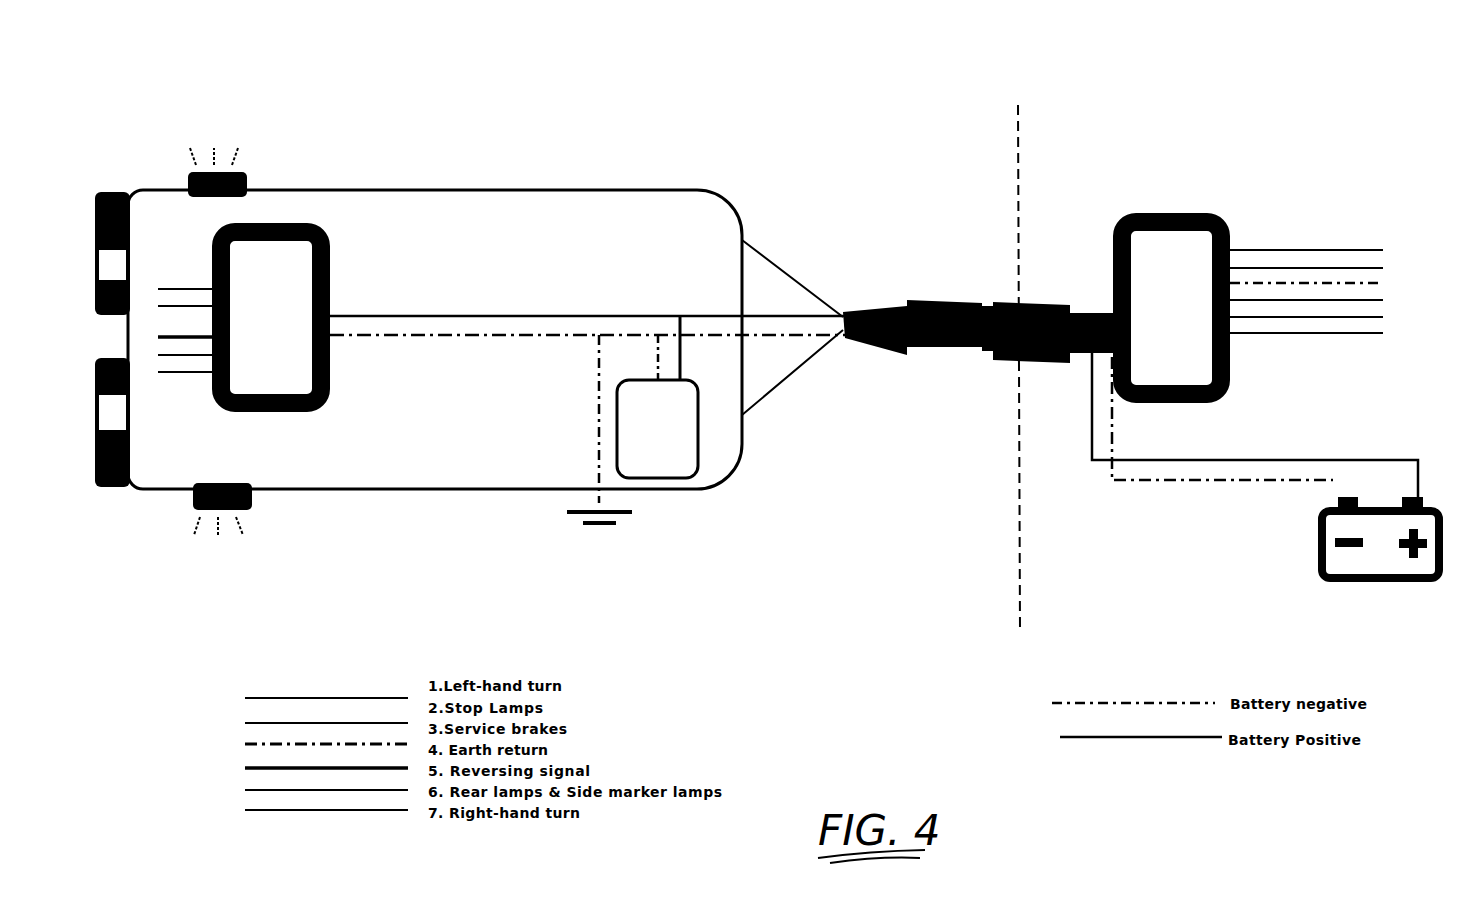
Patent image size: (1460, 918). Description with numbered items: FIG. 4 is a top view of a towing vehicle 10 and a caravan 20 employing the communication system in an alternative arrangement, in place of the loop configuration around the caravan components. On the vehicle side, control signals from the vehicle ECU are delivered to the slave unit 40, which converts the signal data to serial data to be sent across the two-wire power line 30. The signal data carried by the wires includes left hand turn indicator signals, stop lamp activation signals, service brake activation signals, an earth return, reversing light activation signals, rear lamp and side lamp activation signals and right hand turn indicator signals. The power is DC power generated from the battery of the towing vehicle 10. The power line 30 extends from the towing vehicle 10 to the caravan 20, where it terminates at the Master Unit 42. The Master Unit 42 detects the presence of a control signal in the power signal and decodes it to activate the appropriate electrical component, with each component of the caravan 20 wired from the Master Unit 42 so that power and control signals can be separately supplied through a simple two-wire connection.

The towing vehicle 10 is at (1195, 132).
The caravan 20 is at (405, 150).
The two-wire power line 30 is at (885, 310).
The slave unit 40 is at (1171, 308).
The Master Unit 42 is at (271, 317).